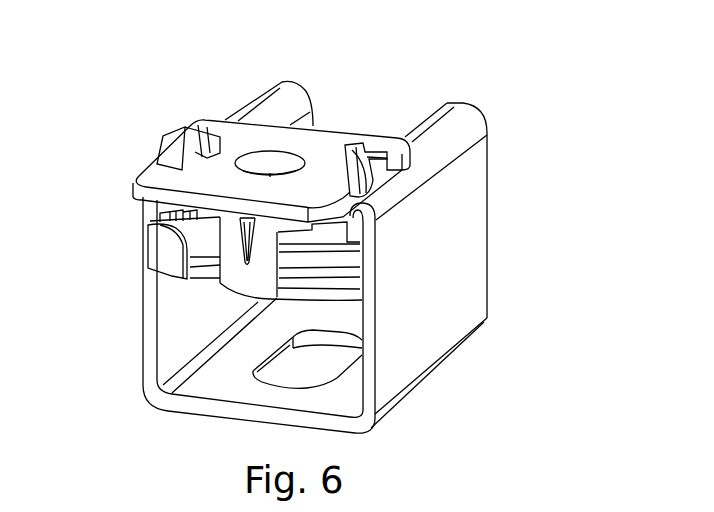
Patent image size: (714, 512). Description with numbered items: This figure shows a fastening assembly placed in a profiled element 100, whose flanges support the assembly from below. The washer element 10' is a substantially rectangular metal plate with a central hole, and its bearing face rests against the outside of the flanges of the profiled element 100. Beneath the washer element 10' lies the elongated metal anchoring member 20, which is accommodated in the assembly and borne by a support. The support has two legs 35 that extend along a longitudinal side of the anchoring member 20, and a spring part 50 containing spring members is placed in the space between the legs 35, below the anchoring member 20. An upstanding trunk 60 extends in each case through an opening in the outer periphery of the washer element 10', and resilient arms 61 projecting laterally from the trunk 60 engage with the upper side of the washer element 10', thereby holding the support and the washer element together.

The washer element 10' is at (271, 112).
The anchoring member 20 is at (200, 241).
The legs 35 is at (107, 296).
The spring part 50 is at (202, 273).
The trunk 60 is at (370, 198).
The resilient arms 61 is at (175, 153).
The profiled element 100 is at (473, 200).